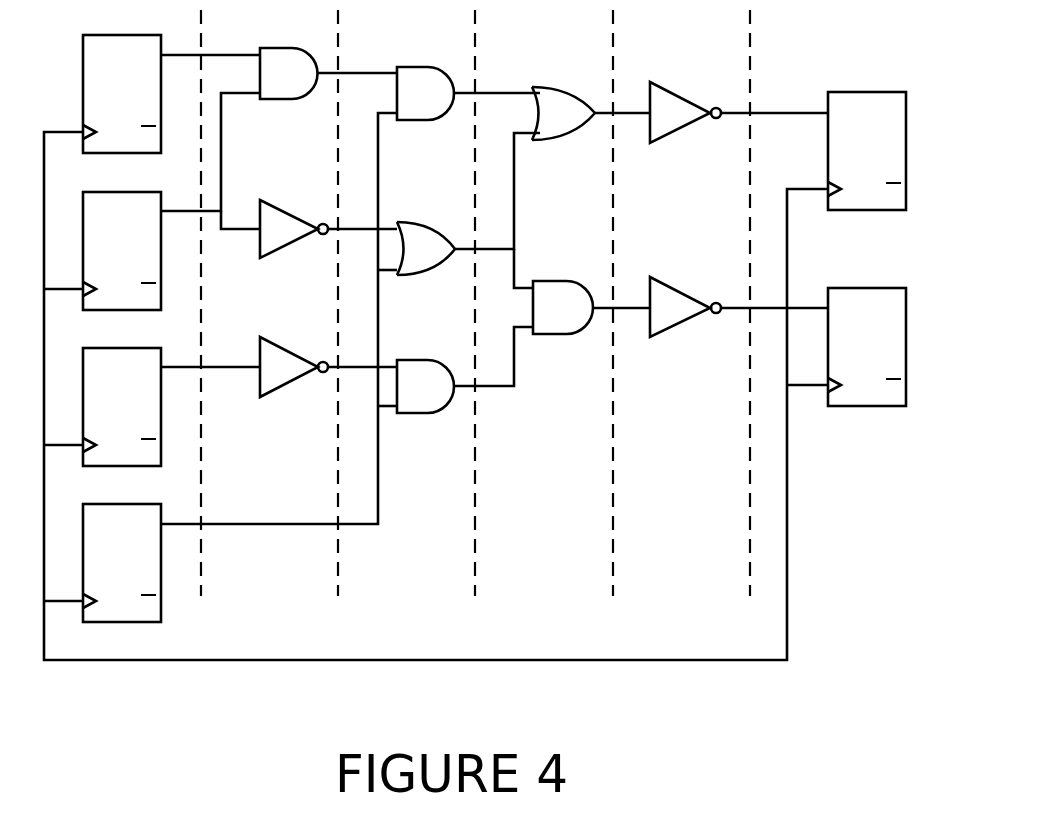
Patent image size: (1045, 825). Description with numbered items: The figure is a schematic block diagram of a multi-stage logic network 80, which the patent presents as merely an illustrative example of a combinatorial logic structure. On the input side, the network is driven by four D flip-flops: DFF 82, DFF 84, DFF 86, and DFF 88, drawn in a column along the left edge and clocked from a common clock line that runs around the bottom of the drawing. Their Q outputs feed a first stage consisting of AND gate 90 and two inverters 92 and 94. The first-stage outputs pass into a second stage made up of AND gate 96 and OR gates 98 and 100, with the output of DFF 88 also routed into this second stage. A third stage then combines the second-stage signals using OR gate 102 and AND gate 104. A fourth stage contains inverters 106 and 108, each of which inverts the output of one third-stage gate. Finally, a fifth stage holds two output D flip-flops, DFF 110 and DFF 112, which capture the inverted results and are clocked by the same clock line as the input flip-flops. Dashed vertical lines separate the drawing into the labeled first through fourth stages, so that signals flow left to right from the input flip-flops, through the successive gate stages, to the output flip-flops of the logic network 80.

The multi-stage logic network 80 is at (496, 335).
The D flip-flop 82 is at (122, 94).
The D flip-flop 84 is at (122, 251).
The D flip-flop 86 is at (122, 407).
The D flip-flop 88 is at (122, 563).
The AND gate 90 is at (291, 51).
The inverter 92 is at (294, 212).
The inverter 94 is at (294, 351).
The AND gate 96 is at (427, 71).
The OR gate 98 is at (427, 229).
The OR gate 100 is at (433, 364).
The OR gate 102 is at (567, 90).
The AND gate 104 is at (569, 286).
The inverter 106 is at (685, 96).
The inverter 108 is at (687, 291).
The D flip-flop 110 is at (867, 151).
The D flip-flop 112 is at (867, 347).